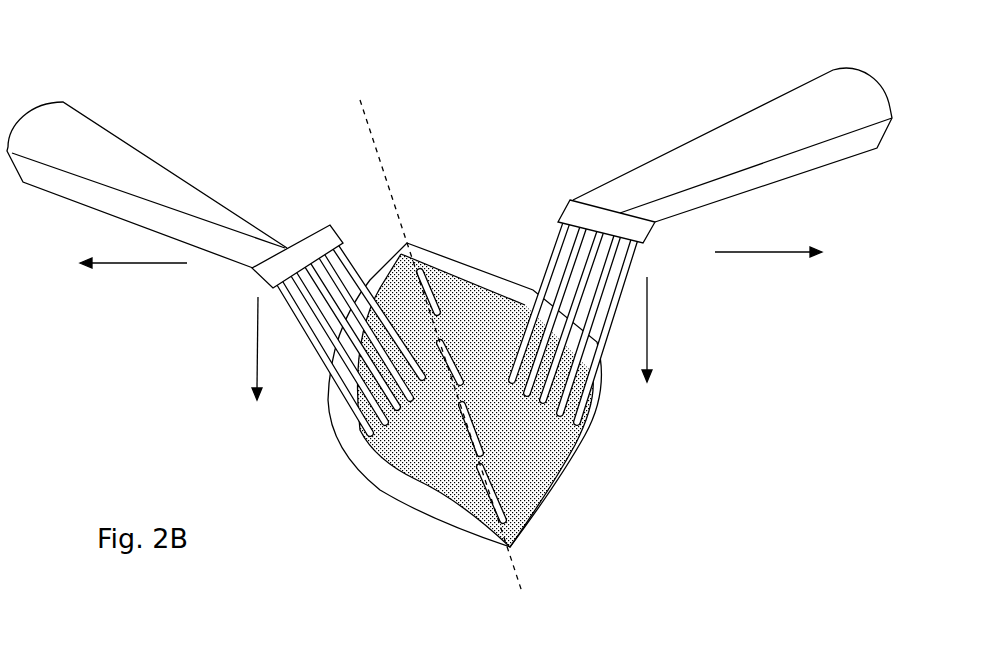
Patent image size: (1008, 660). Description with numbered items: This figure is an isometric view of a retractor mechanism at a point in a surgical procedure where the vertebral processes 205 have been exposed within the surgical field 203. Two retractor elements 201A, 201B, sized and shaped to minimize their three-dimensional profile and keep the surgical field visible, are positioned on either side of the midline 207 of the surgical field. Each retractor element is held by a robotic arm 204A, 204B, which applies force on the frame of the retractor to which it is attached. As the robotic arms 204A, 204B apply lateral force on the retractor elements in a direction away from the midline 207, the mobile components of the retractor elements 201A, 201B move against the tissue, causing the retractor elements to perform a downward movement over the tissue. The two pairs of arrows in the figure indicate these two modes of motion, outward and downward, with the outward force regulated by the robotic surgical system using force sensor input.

The retractor element 201A is at (542, 262).
The retractor element 201B is at (367, 273).
The surgical field 203 is at (443, 468).
The robotic arm 204A is at (793, 85).
The robotic arm 204B is at (88, 108).
The vertebral processes 205 is at (487, 493).
The midline 207 is at (367, 112).